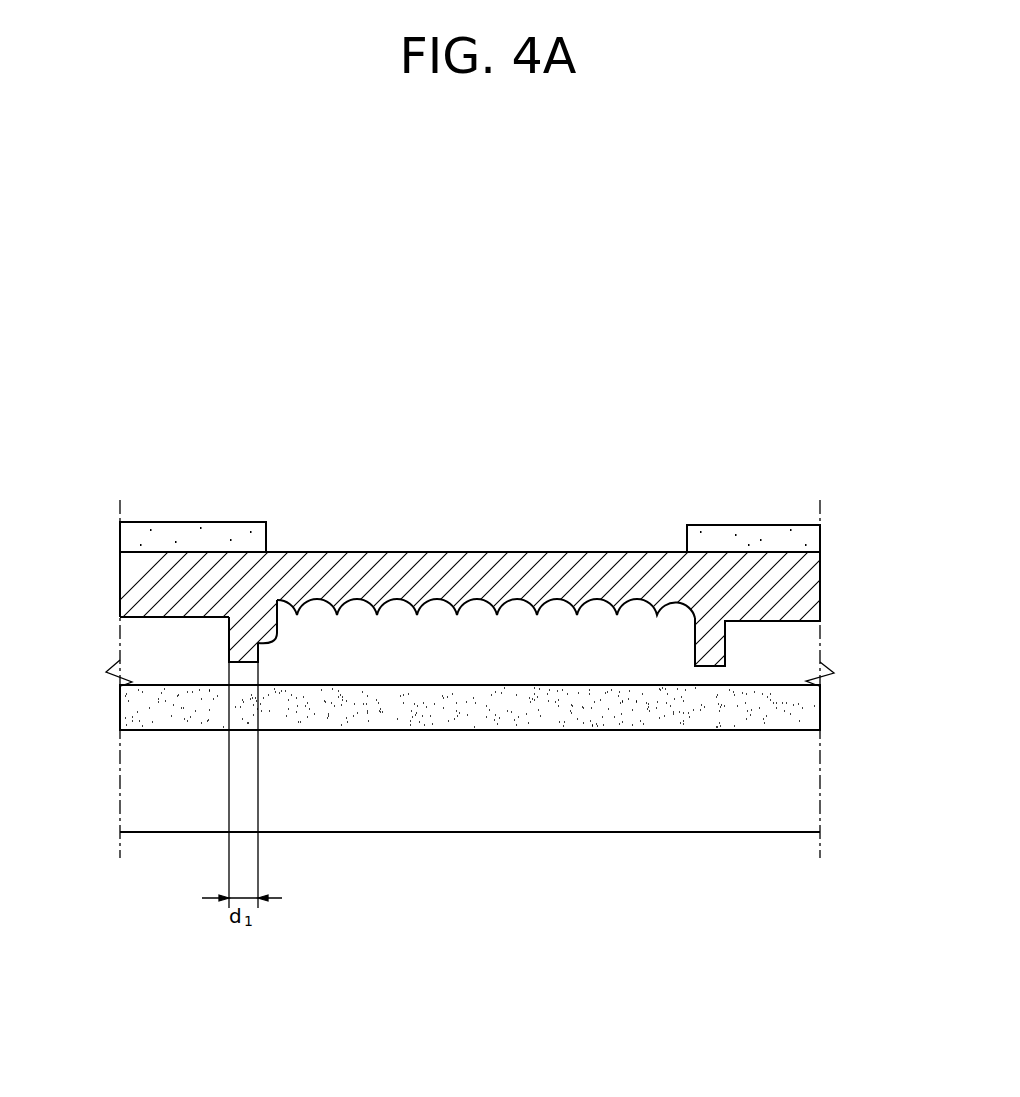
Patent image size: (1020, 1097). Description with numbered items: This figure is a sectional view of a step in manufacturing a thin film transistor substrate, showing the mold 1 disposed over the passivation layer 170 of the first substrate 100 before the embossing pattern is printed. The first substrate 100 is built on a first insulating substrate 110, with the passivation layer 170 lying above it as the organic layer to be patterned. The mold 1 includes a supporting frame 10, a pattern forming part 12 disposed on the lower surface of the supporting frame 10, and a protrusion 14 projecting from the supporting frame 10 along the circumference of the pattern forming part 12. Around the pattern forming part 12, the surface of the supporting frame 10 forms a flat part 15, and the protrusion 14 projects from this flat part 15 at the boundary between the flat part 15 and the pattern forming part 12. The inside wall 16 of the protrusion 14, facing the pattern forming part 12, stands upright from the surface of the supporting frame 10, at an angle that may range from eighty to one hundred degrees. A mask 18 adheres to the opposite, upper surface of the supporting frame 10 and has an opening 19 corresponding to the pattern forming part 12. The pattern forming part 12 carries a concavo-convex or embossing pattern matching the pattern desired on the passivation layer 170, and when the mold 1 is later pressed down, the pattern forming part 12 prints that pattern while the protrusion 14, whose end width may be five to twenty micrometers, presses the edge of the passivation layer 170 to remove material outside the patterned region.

The mold 1 is at (680, 455).
The supporting frame 10 is at (127, 581).
The pattern forming part 12 is at (465, 600).
The protrusion 14 is at (232, 644).
The flat part 15 is at (228, 618).
The inside wall 16 is at (277, 636).
The mask 18 is at (195, 533).
The opening 19 is at (355, 535).
The first substrate 100 is at (704, 883).
The first insulating substrate 110 is at (808, 786).
The passivation layer 170 is at (808, 708).